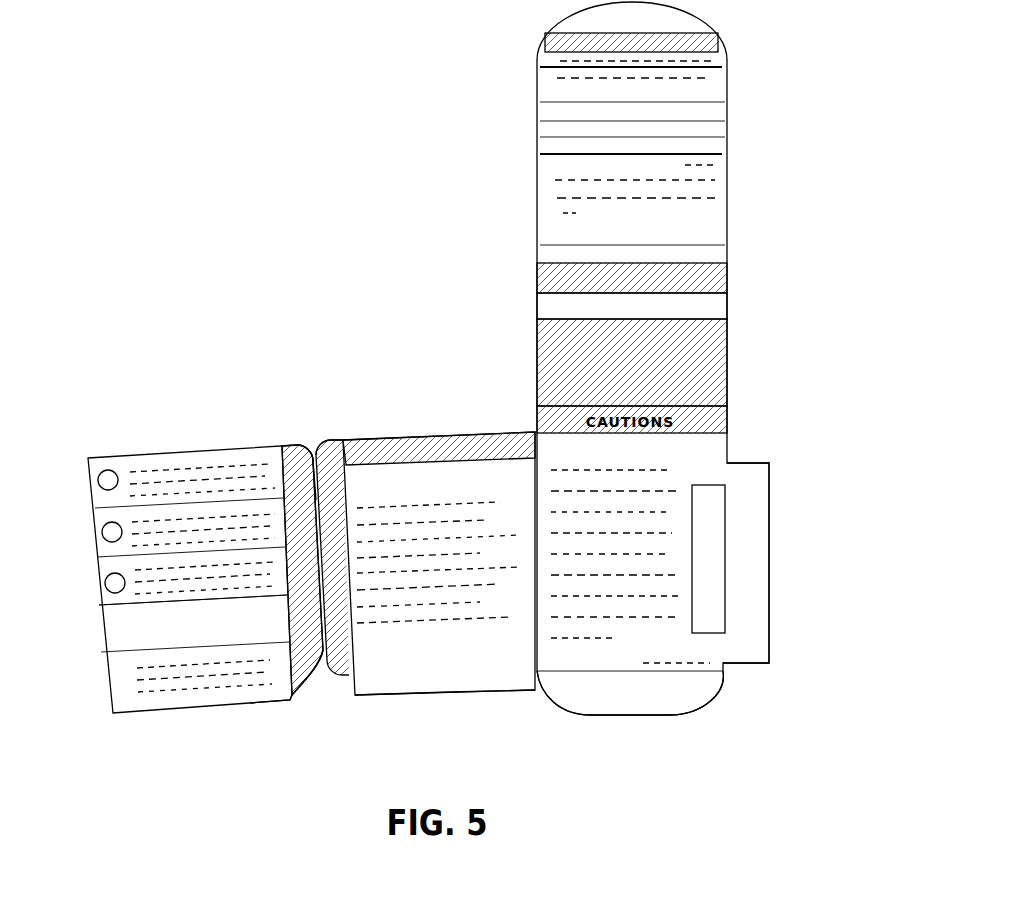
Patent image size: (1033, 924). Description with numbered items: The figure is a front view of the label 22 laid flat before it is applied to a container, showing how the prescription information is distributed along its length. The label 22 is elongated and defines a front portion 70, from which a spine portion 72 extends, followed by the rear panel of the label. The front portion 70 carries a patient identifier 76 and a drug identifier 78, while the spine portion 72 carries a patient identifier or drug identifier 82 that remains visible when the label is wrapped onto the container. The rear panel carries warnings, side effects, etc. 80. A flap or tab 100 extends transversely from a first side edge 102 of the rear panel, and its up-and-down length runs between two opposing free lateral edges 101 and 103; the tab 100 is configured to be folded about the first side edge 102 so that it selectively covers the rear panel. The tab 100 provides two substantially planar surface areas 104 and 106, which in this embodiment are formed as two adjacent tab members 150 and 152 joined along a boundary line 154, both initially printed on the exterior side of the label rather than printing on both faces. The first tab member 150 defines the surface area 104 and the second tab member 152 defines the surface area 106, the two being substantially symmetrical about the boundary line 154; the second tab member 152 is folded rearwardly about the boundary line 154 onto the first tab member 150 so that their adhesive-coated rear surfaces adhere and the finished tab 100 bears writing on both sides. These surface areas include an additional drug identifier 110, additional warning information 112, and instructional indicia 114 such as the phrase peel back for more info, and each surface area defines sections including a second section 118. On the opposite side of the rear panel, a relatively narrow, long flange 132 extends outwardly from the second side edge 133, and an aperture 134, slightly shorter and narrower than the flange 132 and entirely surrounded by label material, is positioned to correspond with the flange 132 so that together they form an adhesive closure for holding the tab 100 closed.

The label 22 is at (267, 236).
The front portion 70 is at (548, 209).
The spine portion 72 is at (718, 340).
The patient identifier 76 is at (716, 303).
The drug identifier 78 is at (714, 277).
The warnings, side effects, etc. 80 is at (664, 470).
The patient identifier or drug identifier 82 is at (716, 378).
The tab 100 is at (330, 440).
The free lateral edge 101 is at (460, 433).
The first side edge 102 is at (535, 660).
The free lateral edge 103 is at (510, 690).
The substantially planar surface area 104 is at (432, 685).
The substantially planar surface area 106 is at (119, 620).
The additional drug identifier 110 is at (436, 445).
The additional warning information 112 is at (350, 440).
The instructional indicia 114 is at (313, 450).
The second section 118 is at (300, 462).
The flange 132 is at (752, 562).
The second side edge 133 is at (725, 678).
The aperture 134 is at (712, 490).
The first tab member 150 is at (385, 690).
The second tab member 152 is at (119, 640).
The boundary line 154 is at (300, 690).